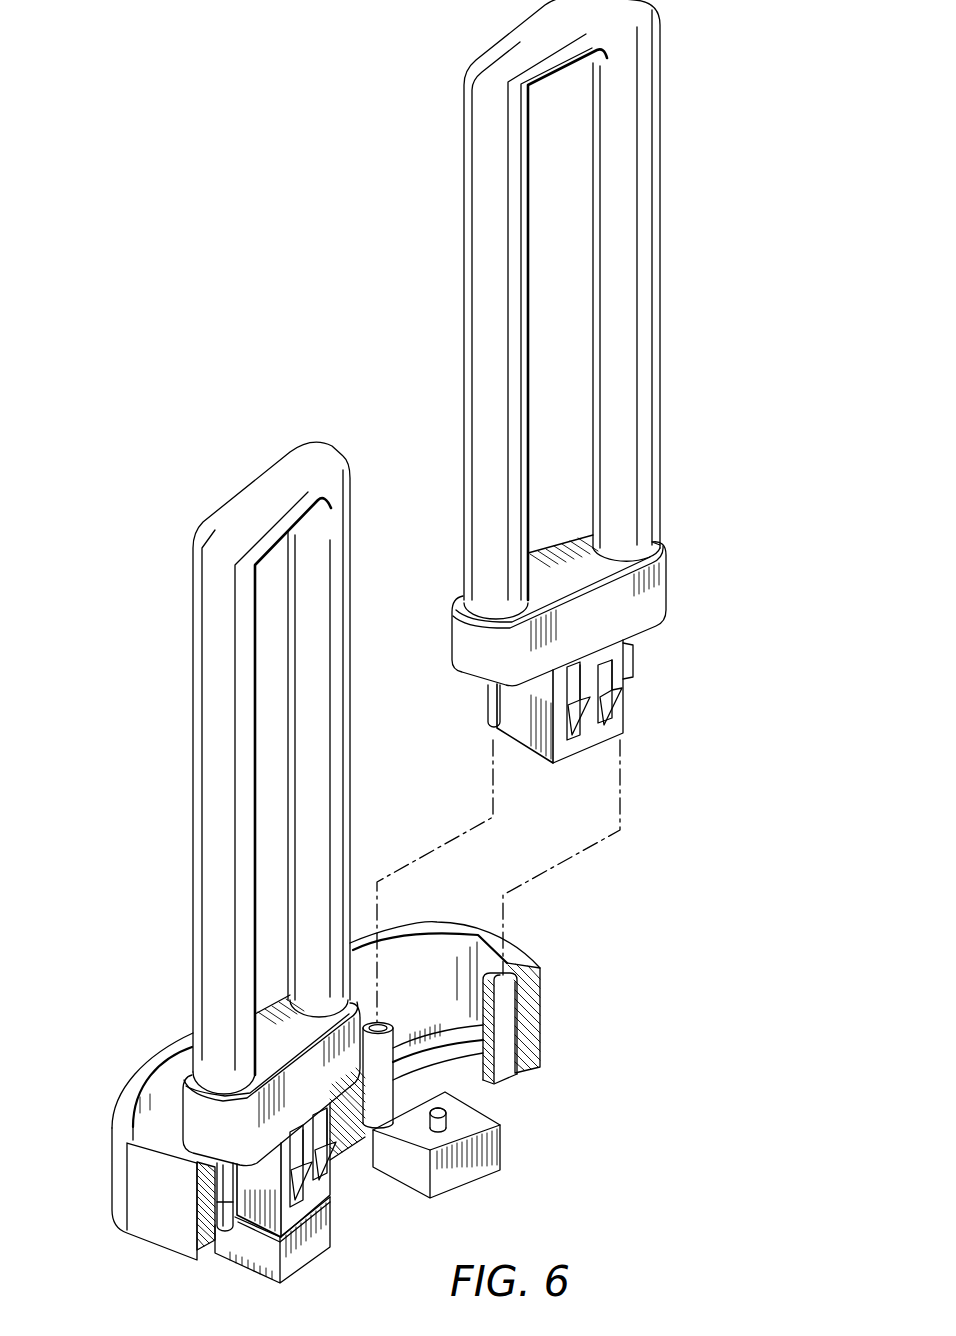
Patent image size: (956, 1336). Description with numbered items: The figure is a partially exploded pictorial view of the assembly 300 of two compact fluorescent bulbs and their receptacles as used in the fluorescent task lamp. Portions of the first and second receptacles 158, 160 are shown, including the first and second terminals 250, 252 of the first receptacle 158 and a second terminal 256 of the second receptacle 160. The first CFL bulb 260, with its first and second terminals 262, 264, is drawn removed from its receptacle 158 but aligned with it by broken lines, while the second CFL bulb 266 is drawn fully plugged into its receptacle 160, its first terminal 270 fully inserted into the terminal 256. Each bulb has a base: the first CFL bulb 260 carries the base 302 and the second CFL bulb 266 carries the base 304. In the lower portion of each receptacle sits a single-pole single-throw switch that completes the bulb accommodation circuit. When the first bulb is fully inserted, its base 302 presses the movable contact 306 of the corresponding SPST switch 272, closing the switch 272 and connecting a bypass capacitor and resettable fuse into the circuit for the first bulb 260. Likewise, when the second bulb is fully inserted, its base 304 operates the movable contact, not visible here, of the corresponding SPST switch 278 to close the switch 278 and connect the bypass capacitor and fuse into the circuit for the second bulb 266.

The assembly 300 is at (110, 625).
The first CFL bulb 260 is at (660, 290).
The first terminal of the first CFL bulb 262 is at (633, 657).
The second terminal of the first CFL bulb 264 is at (488, 700).
The base of the first CFL bulb 302 is at (570, 746).
The second CFL bulb 266 is at (193, 820).
The first receptacle 158 is at (417, 955).
The second receptacle 160 is at (160, 1075).
The second terminal of the first receptacle 252 is at (398, 1032).
The first terminal of the first receptacle 250 is at (503, 1038).
The movable contact 306 is at (447, 1103).
The SPST switch 272 is at (475, 1173).
The base of the second CFL bulb 304 is at (330, 1184).
The SPST switch 278 is at (315, 1243).
The second terminal of the second receptacle 256 is at (223, 1227).
The first terminal of the second CFL bulb 270 is at (220, 1190).